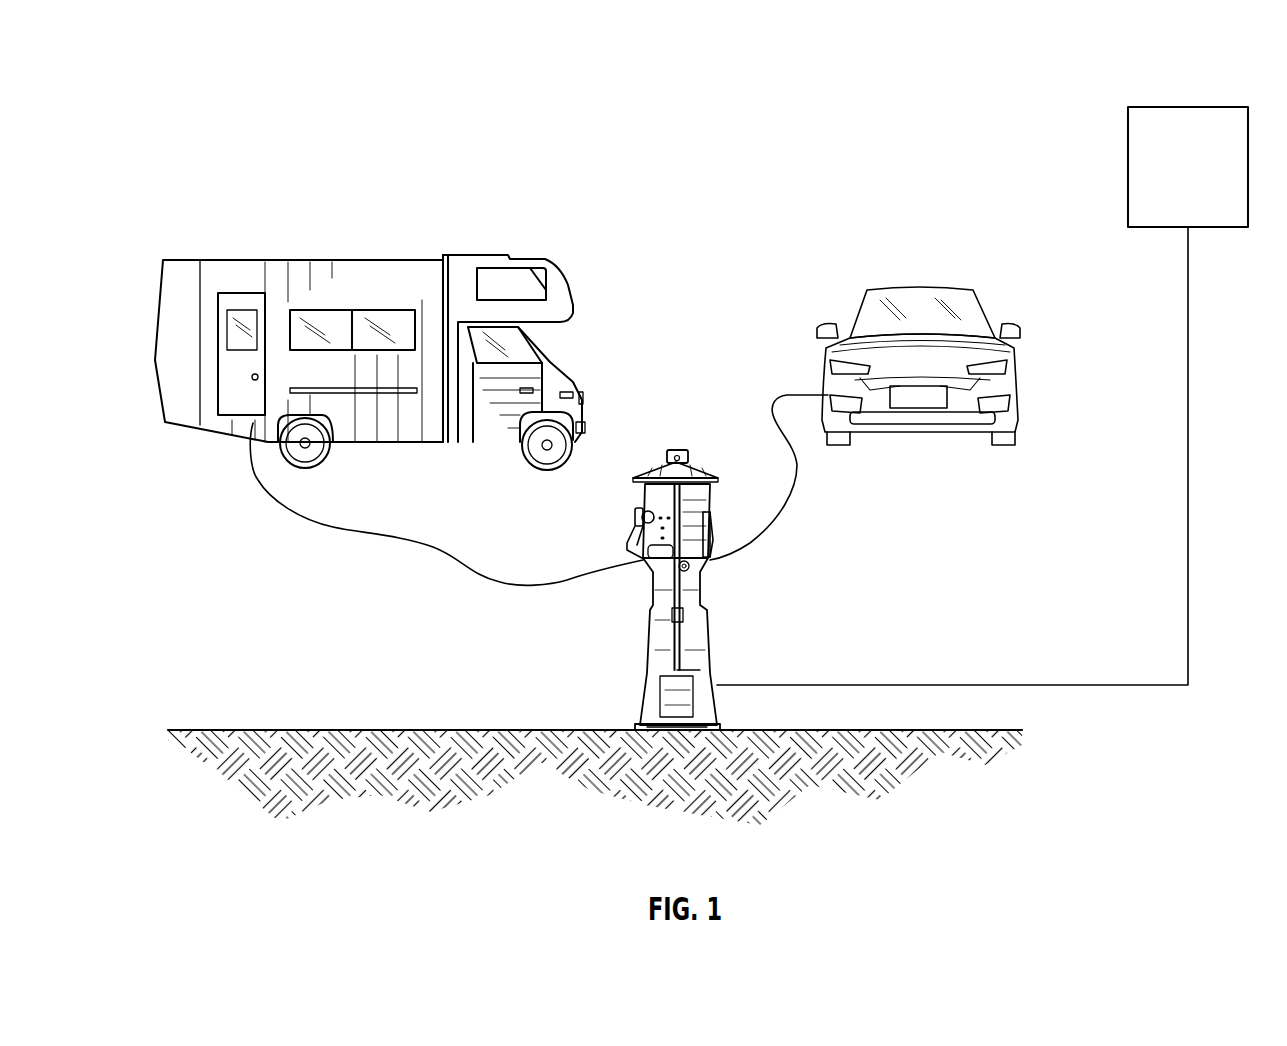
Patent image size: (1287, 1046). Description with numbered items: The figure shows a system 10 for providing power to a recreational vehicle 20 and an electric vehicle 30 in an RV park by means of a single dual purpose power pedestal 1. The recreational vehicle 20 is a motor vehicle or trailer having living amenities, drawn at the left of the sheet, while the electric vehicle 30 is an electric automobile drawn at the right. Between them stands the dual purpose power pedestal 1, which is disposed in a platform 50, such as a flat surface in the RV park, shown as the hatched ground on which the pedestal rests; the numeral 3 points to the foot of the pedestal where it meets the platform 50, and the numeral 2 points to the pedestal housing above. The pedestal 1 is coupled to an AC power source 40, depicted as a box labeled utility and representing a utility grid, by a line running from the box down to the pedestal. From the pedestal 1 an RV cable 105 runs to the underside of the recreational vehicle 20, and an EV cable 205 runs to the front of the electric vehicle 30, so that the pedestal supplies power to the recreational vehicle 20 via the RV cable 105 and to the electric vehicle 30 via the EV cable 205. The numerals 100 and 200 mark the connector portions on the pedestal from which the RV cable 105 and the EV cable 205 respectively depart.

The system 10 is at (688, 180).
The dual purpose power pedestal 1 is at (684, 413).
The pedestal housing 2 is at (647, 628).
The base footing 3 is at (672, 730).
The recreational vehicle 20 is at (330, 258).
The electric vehicle 30 is at (935, 285).
The AC power source 40 is at (1180, 107).
The platform 50 is at (258, 730).
The RV power connector 100 is at (637, 522).
The RV cable 105 is at (435, 548).
The EV charging connector 200 is at (713, 516).
The EV cable 205 is at (797, 490).